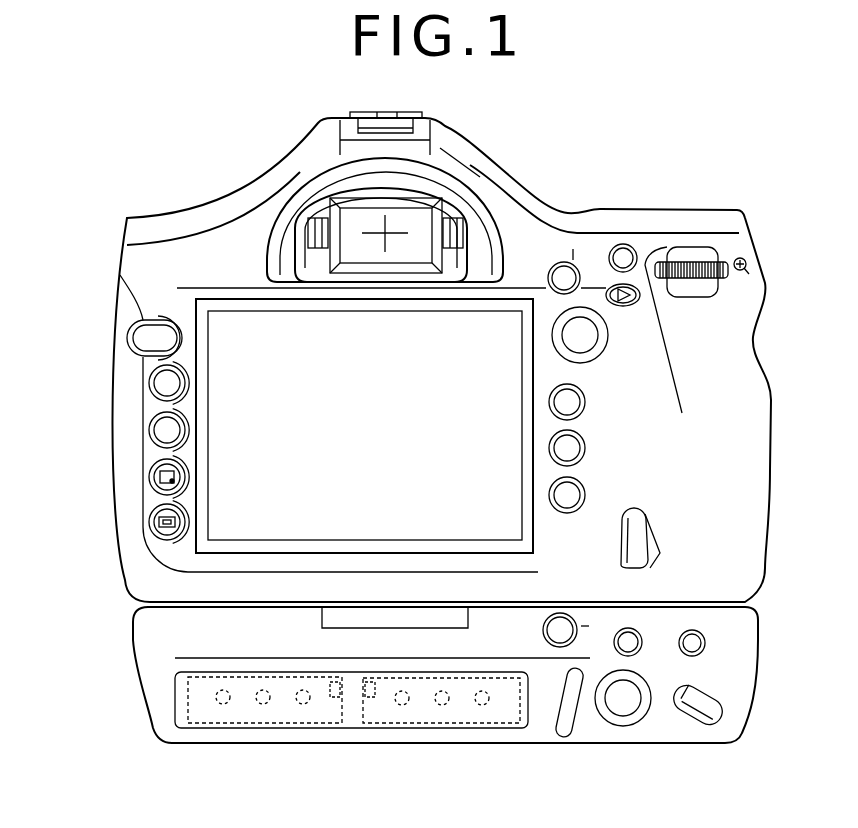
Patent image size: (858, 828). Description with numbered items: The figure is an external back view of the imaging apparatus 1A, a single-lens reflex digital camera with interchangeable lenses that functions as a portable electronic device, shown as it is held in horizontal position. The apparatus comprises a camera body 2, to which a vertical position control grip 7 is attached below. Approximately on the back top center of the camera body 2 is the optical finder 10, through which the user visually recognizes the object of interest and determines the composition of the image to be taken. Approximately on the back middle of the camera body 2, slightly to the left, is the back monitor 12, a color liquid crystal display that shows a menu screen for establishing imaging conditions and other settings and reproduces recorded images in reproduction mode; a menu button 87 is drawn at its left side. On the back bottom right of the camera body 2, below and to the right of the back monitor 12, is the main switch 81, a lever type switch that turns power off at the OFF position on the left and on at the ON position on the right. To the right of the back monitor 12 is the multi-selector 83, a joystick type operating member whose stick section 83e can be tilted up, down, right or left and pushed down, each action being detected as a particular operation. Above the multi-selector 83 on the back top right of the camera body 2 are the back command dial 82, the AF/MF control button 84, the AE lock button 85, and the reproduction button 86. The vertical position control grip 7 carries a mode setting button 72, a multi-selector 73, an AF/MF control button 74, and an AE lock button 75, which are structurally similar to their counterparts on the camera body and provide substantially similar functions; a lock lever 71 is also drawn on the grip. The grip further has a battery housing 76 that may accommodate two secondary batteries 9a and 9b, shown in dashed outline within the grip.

The imaging apparatus 1A is at (150, 182).
The camera body 2 is at (249, 182).
The optical finder 10 is at (362, 217).
The back monitor 12 is at (250, 527).
The menu button 87 is at (127, 336).
The AF/MF control button 84 is at (562, 262).
The AE lock button 85 is at (623, 244).
The reproduction button 86 is at (640, 297).
The back command dial 82 is at (693, 262).
The multi-selector 83 is at (578, 362).
The stick section 83e is at (582, 335).
The main switch 81 is at (637, 547).
The vertical position control grip 7 is at (134, 692).
The battery housing 76 is at (243, 753).
The battery 9a is at (294, 724).
The battery 9b is at (442, 724).
The AF/MF control button 74 is at (547, 643).
The AE lock button 75 is at (608, 652).
The multi-selector 73 is at (632, 727).
The mode setting button 72 is at (693, 660).
The grip lock lever 71 is at (705, 707).